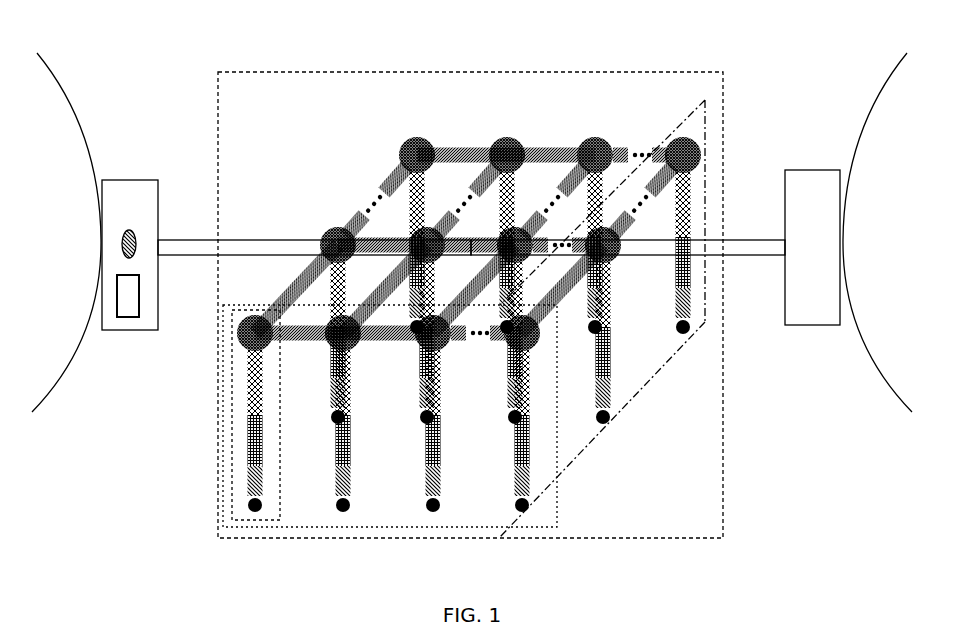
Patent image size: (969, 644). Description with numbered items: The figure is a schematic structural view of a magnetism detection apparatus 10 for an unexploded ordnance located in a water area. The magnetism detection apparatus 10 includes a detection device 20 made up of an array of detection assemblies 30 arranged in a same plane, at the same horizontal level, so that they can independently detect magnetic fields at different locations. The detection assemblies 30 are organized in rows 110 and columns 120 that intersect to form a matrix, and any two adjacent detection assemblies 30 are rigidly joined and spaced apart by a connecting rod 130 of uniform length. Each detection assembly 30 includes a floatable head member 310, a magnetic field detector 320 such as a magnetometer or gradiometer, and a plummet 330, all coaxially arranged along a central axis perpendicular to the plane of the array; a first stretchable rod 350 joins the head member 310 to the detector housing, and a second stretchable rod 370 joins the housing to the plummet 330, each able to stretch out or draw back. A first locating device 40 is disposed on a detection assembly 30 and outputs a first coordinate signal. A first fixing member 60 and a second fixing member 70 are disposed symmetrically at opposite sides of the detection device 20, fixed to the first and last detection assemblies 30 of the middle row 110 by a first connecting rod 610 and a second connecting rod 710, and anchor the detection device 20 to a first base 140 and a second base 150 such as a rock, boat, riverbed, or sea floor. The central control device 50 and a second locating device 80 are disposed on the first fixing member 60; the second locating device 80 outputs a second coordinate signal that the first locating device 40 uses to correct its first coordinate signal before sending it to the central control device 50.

The magnetism detection apparatus 10 is at (468, 43).
The detection device 20 is at (257, 108).
The detection assembly 30 is at (152, 370).
The first locating device 40 is at (250, 303).
The central control device 50 is at (125, 307).
The first fixing member 60 is at (108, 200).
The second fixing member 70 is at (795, 175).
The second locating device 80 is at (129, 232).
The row 110 is at (547, 510).
The column 120 is at (663, 353).
The connecting rod 130 is at (313, 343).
The first base 140 is at (70, 147).
The second base 150 is at (877, 122).
The head member 310 is at (247, 340).
The magnetic field detector 320 is at (248, 440).
The plummet 330 is at (252, 512).
The first stretchable rod 350 is at (270, 373).
The second stretchable rod 370 is at (263, 490).
The first connecting rod 610 is at (200, 240).
The second connecting rod 710 is at (737, 238).